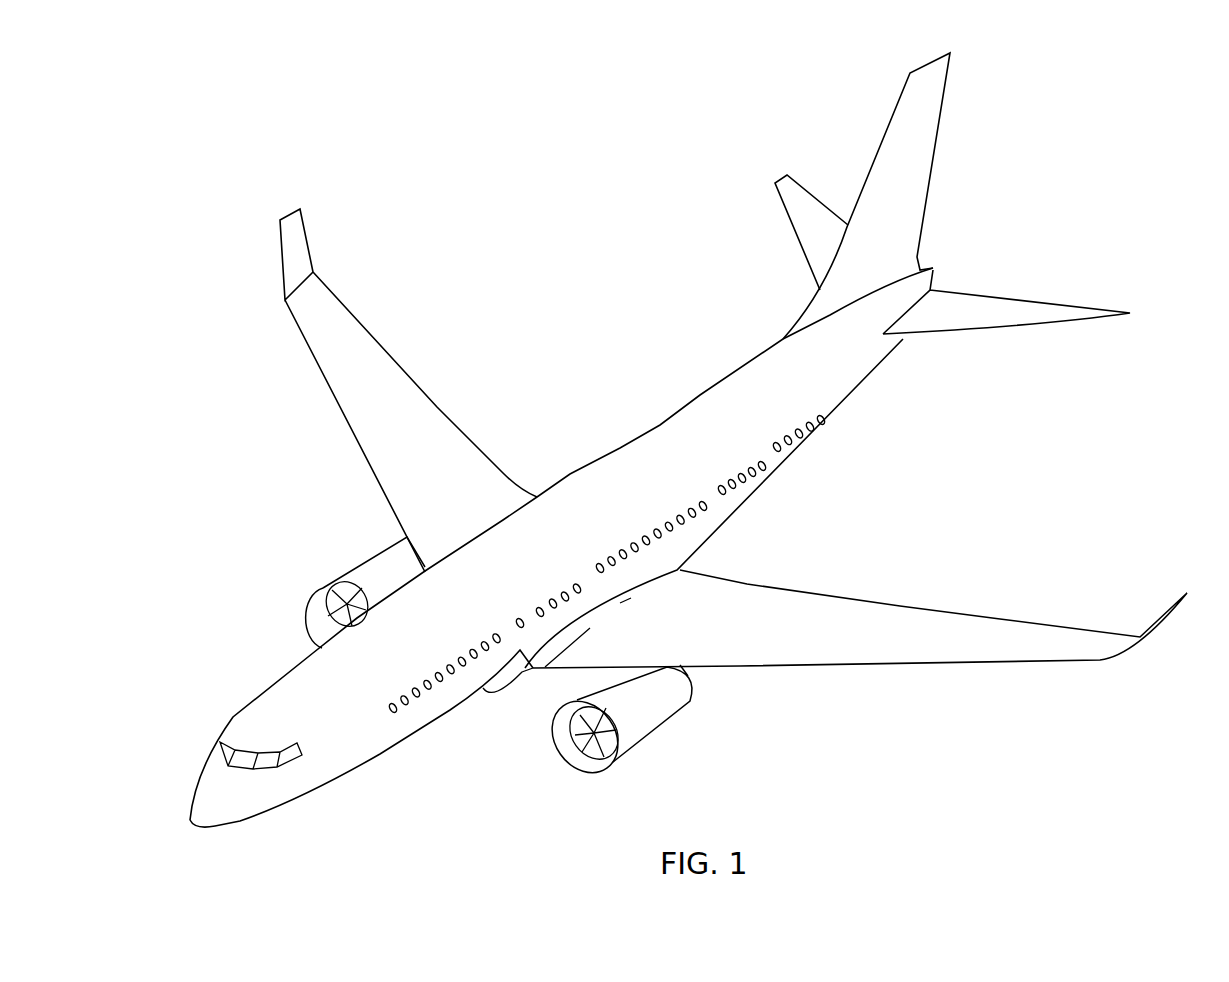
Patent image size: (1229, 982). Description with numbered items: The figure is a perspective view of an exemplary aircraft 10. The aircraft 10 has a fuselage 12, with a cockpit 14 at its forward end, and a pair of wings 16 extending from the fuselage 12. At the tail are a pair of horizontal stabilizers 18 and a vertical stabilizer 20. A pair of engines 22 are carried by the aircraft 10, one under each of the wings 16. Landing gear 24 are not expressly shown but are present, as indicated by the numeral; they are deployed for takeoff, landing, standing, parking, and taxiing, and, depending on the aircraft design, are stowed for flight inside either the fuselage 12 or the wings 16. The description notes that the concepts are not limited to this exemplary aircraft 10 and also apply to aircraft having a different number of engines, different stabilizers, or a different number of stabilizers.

The aircraft 10 is at (552, 218).
The fuselage 12 is at (380, 678).
The cockpit 14 is at (233, 715).
The pair of wings 16 is at (416, 440).
The pair of horizontal stabilizers 18 is at (827, 235).
The vertical stabilizer 20 is at (905, 221).
The pair of engines 22 is at (398, 590).
The landing gear 24 is at (556, 692).